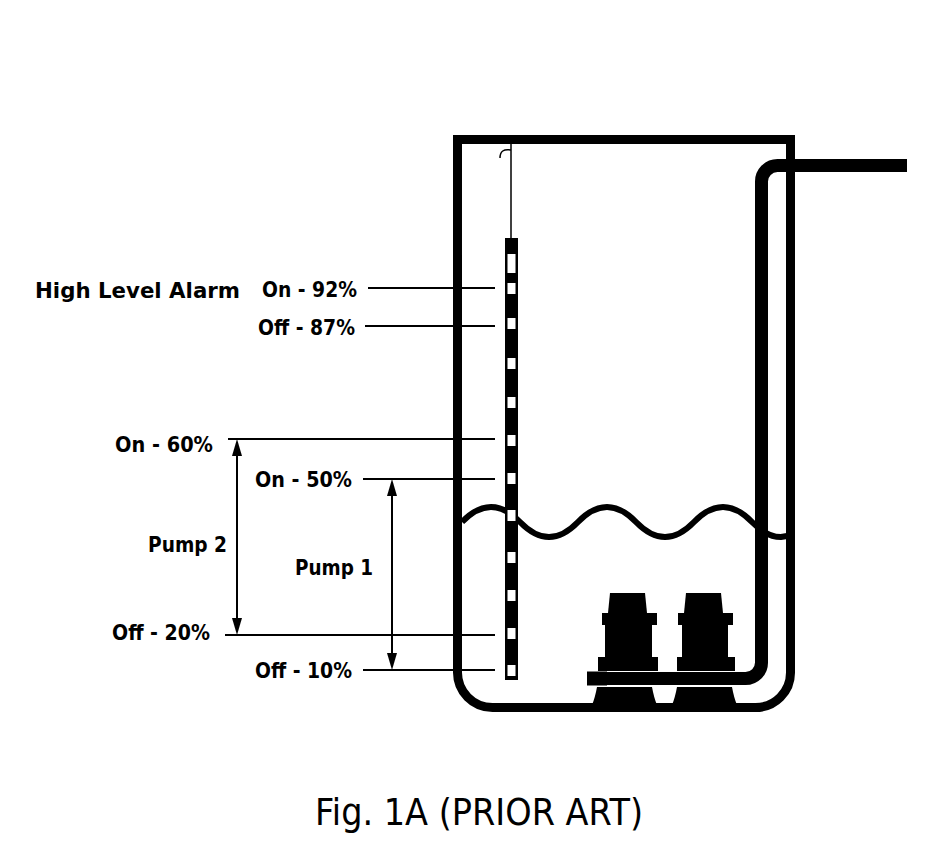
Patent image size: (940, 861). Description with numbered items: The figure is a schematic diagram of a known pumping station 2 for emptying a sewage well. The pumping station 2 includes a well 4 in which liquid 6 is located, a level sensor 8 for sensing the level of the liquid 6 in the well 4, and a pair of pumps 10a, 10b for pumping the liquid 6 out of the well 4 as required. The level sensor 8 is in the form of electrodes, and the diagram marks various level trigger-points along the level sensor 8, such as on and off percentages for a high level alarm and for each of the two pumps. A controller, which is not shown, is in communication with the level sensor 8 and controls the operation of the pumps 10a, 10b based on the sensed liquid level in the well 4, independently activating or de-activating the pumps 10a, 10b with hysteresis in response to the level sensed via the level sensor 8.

The pumping station 2 is at (692, 106).
The well 4 is at (794, 390).
The liquid 6 is at (637, 570).
The level sensor 8 is at (516, 269).
The pump 10a is at (605, 621).
The pump 10b is at (705, 594).